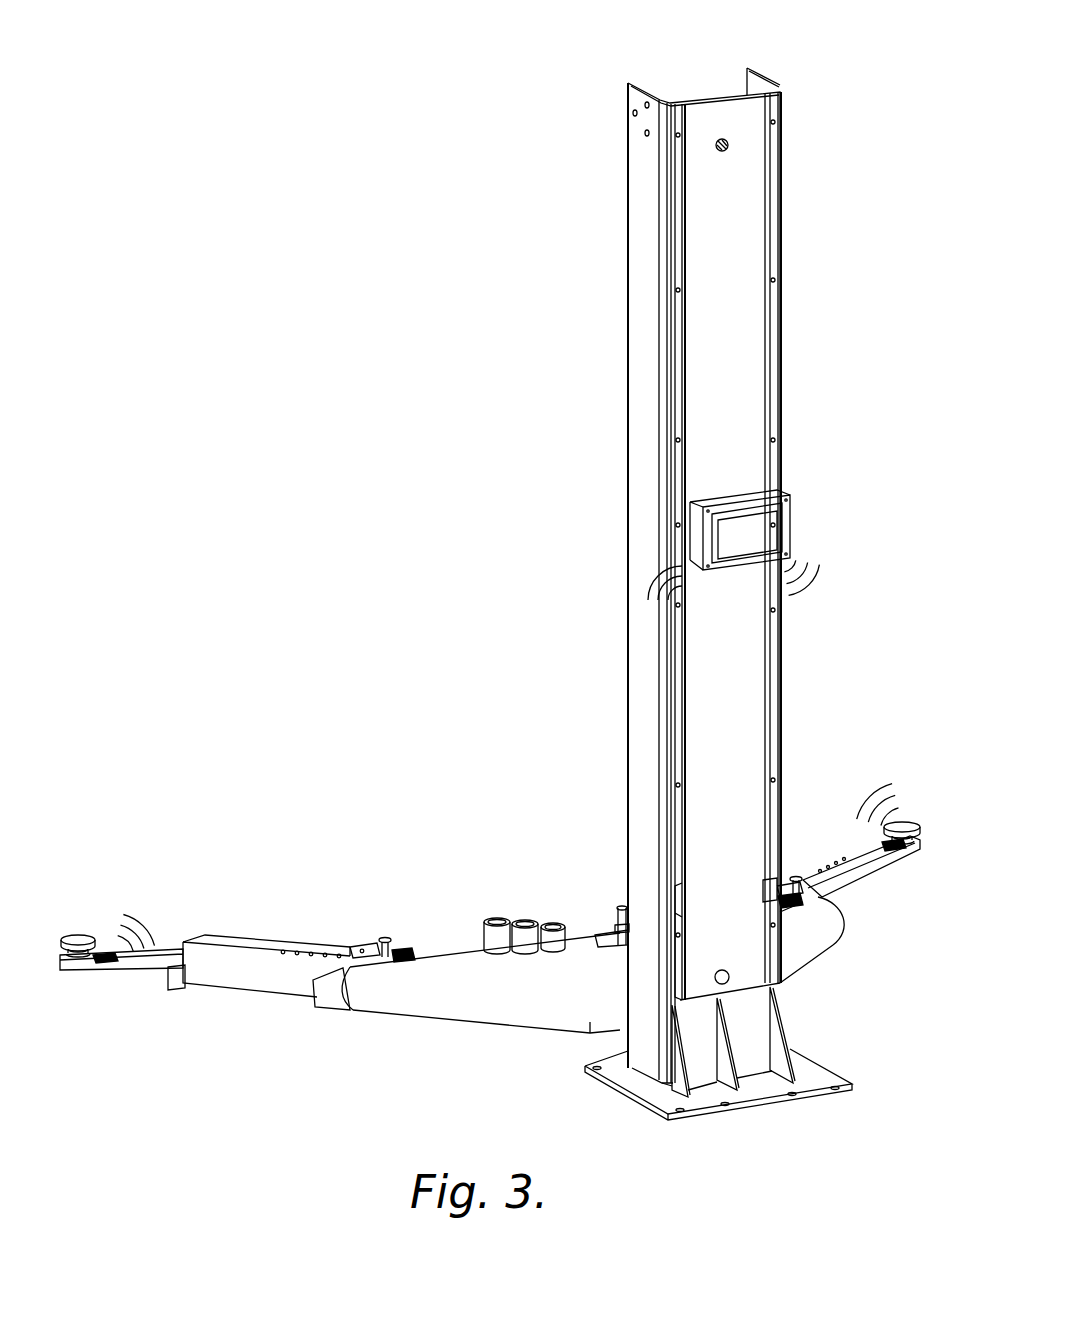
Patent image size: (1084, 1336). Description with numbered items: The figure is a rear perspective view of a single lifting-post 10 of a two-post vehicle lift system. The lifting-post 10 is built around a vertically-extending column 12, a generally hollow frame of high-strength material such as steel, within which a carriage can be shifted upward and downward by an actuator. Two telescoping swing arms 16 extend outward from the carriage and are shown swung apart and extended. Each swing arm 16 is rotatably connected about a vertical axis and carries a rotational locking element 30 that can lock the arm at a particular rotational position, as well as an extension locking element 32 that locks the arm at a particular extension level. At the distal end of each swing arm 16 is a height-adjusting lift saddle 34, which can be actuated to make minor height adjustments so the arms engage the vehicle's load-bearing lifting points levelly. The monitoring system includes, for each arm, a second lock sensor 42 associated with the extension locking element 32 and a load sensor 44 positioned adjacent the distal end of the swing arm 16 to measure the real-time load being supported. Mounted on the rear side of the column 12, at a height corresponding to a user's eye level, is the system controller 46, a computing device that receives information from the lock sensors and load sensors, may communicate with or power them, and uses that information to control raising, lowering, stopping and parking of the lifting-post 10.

The lifting-post 10 is at (436, 261).
The column 12 is at (645, 365).
The swing arm 16 is at (487, 1007).
The rotational locking element 30 is at (620, 908).
The extension locking element 32 is at (384, 937).
The height-adjusting lift saddle 34 is at (77, 935).
The second lock sensor 42 is at (412, 955).
The load sensor 44 is at (113, 960).
The system controller 46 is at (790, 510).